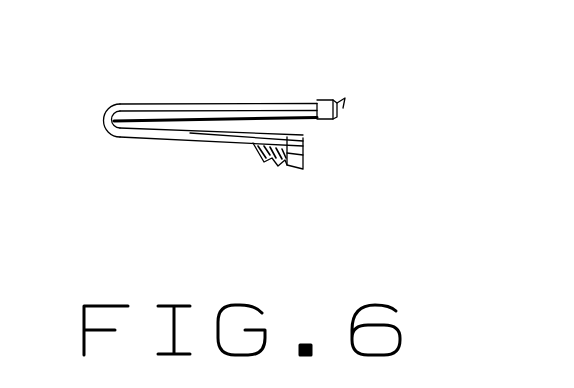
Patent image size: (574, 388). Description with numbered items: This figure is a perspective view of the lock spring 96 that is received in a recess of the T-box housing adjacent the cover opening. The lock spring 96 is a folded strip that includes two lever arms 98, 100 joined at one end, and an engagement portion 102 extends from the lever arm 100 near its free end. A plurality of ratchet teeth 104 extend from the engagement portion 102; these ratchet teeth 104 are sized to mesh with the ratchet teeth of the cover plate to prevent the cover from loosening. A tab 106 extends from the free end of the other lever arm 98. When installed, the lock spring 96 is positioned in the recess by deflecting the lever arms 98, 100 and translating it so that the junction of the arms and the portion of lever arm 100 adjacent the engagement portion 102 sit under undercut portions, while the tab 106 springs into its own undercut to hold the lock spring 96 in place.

The lock spring 96 is at (251, 120).
The lever arm 98 is at (180, 109).
The lever arm 100 is at (155, 141).
The engagement portion 102 is at (297, 142).
The ratchet teeth 104 is at (287, 170).
The tab 106 is at (343, 98).